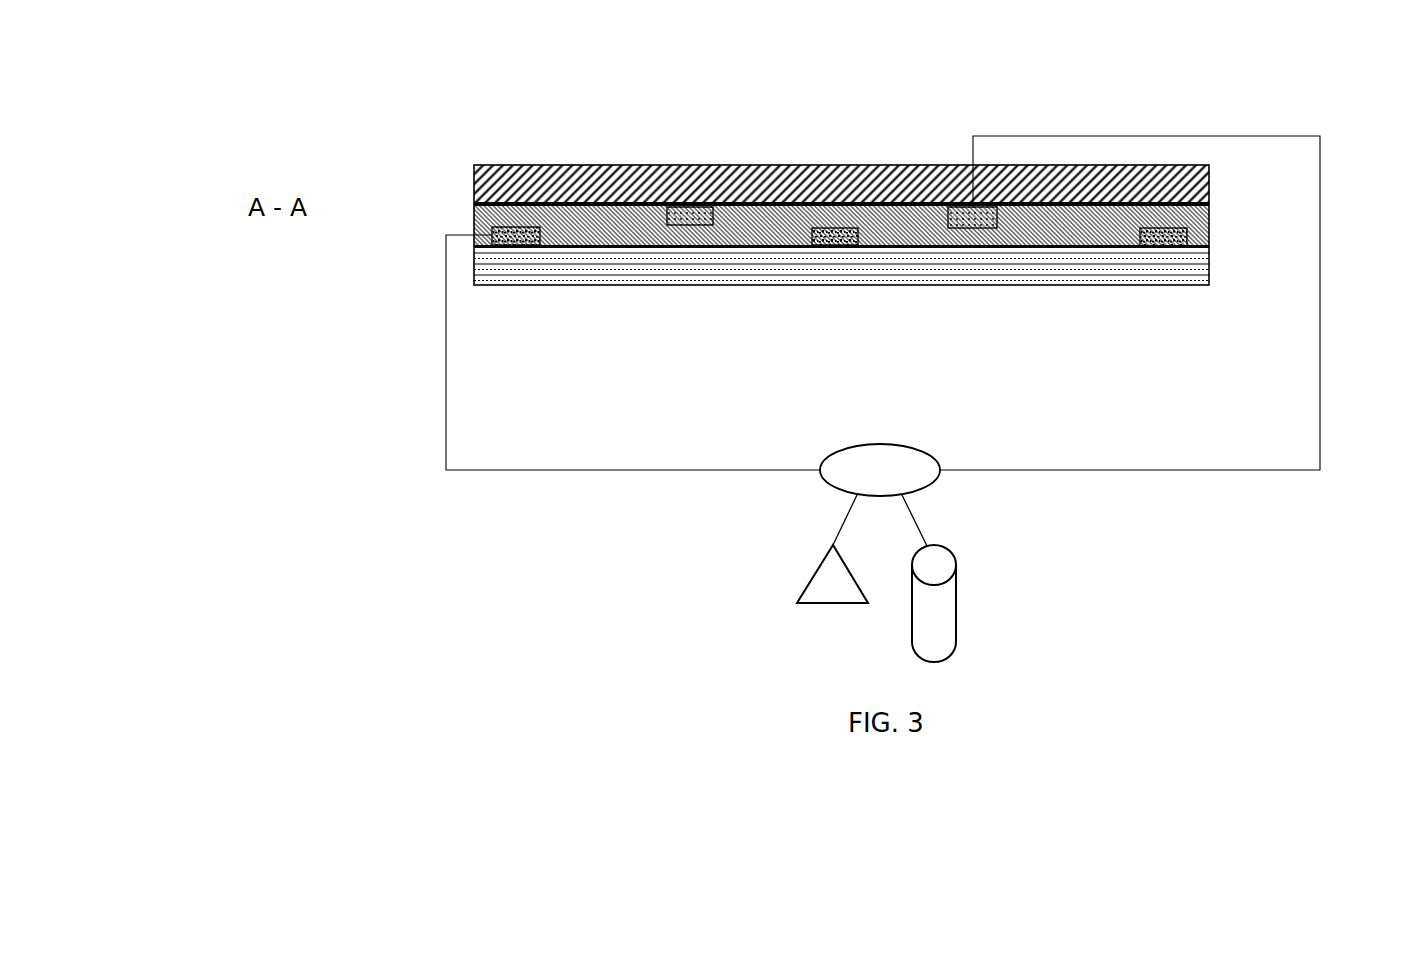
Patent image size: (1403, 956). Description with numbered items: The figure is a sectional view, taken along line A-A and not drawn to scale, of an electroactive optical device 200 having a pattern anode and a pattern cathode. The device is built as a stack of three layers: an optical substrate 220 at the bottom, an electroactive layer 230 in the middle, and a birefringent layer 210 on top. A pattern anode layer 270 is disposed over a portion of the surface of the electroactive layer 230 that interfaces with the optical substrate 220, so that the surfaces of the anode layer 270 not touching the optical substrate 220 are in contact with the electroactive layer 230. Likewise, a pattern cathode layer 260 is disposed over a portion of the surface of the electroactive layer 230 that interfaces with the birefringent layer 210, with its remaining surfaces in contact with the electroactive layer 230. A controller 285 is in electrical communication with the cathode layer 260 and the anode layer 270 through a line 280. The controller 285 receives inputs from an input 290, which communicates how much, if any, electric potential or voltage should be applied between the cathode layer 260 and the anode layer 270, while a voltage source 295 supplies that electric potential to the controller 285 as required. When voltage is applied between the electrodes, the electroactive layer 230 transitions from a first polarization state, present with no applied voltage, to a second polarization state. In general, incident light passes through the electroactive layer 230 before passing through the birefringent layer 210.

The electroactive optical device 200 is at (806, 59).
The birefringent layer 210 is at (929, 165).
The optical substrate 220 is at (1066, 285).
The electroactive layer 230 is at (472, 221).
The pattern cathode layer 260 is at (972, 208).
The pattern anode layer 270 is at (1140, 228).
The line 280 is at (538, 470).
The controller 285 is at (858, 485).
The input 290 is at (813, 575).
The voltage source 295 is at (956, 604).